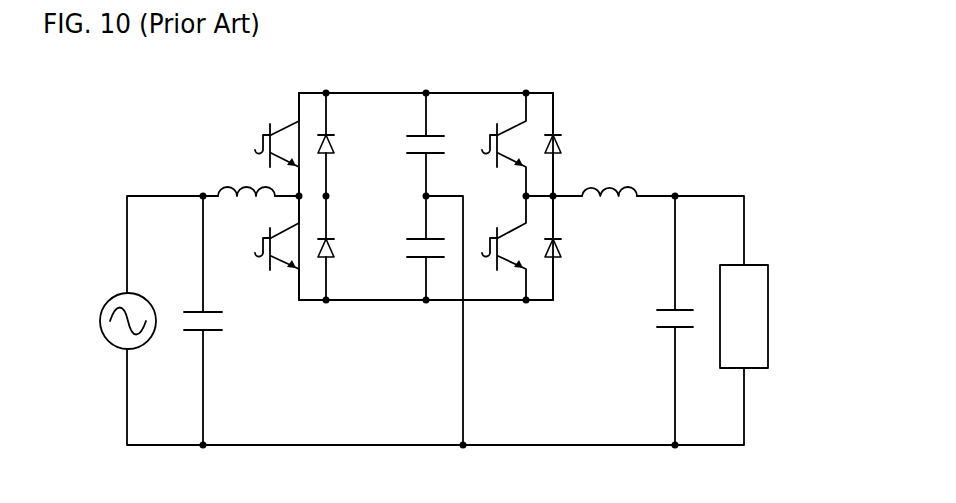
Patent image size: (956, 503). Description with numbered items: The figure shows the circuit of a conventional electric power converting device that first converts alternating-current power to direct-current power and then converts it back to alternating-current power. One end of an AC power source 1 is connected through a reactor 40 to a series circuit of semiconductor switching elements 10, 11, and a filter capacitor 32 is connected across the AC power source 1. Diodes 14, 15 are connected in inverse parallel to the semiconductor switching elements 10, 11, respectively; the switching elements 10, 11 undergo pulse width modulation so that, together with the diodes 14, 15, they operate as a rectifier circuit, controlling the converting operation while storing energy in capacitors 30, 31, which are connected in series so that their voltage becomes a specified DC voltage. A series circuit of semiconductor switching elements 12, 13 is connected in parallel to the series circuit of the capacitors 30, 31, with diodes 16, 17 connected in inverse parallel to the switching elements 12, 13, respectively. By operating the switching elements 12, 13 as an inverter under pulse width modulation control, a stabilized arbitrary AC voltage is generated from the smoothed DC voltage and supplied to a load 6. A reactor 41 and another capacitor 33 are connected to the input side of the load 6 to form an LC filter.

The AC power source 1 is at (115, 292).
The load 6 is at (757, 350).
The semiconductor switching element 10 is at (283, 120).
The semiconductor switching element 11 is at (282, 273).
The semiconductor switching element 12 is at (505, 118).
The semiconductor switching element 13 is at (505, 277).
The diode 14 is at (338, 144).
The diode 15 is at (338, 248).
The diode 16 is at (565, 144).
The diode 17 is at (565, 248).
The capacitor 30 is at (419, 144).
The capacitor 31 is at (419, 248).
The filter capacitor 32 is at (225, 322).
The capacitor 33 is at (652, 320).
The reactor 40 is at (248, 185).
The reactor 41 is at (617, 185).